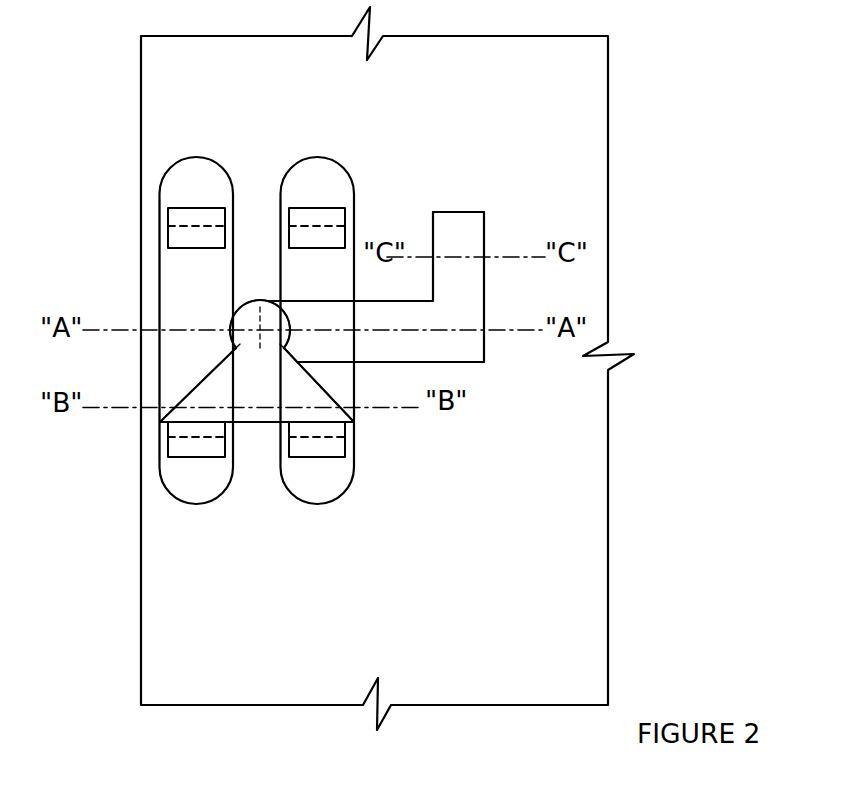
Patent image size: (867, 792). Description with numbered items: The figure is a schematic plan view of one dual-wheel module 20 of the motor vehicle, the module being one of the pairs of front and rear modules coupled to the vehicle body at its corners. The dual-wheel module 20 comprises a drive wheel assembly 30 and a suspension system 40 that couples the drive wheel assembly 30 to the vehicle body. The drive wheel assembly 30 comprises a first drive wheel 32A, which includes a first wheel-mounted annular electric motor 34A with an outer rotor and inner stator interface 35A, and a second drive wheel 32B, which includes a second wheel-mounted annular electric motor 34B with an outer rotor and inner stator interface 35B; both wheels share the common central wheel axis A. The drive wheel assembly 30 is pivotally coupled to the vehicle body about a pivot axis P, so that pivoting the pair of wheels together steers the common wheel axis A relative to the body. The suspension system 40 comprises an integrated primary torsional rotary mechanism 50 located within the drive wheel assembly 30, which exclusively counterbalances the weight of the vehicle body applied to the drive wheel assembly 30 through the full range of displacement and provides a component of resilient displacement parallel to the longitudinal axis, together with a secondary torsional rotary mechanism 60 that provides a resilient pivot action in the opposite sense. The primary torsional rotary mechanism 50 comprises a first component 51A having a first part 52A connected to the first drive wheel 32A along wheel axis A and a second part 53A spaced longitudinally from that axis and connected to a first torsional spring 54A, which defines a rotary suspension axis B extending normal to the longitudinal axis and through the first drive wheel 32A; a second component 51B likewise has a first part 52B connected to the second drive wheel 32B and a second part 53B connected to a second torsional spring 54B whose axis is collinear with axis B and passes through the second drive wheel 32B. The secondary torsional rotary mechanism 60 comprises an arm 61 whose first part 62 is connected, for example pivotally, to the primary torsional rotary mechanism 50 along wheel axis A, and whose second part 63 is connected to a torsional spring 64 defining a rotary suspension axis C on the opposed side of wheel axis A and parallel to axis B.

The dual-wheel module 20 is at (170, 158).
The drive wheel assembly 30 is at (194, 512).
The first drive wheel 32A is at (202, 157).
The second drive wheel 32B is at (313, 158).
The first wheel-mounted annular electric motor 34A is at (158, 214).
The second wheel-mounted annular electric motor 34B is at (276, 196).
The outer rotor and inner stator interface 35A is at (182, 227).
The outer rotor and inner stator interface 35B is at (332, 223).
The suspension system 40 is at (470, 381).
The primary torsional rotary mechanism 50 is at (254, 423).
The first component 51A is at (232, 383).
The second component 51B is at (290, 385).
The first part 52A is at (244, 305).
The first part 52B is at (262, 302).
The second part 53A is at (237, 348).
The second part 53B is at (284, 349).
The first torsional spring 54A is at (197, 412).
The second torsional spring 54B is at (310, 414).
The secondary torsional rotary mechanism 60 is at (473, 211).
The arm 61 is at (484, 285).
The first part 62 is at (476, 364).
The second part 63 is at (482, 242).
The torsional spring 64 is at (433, 257).